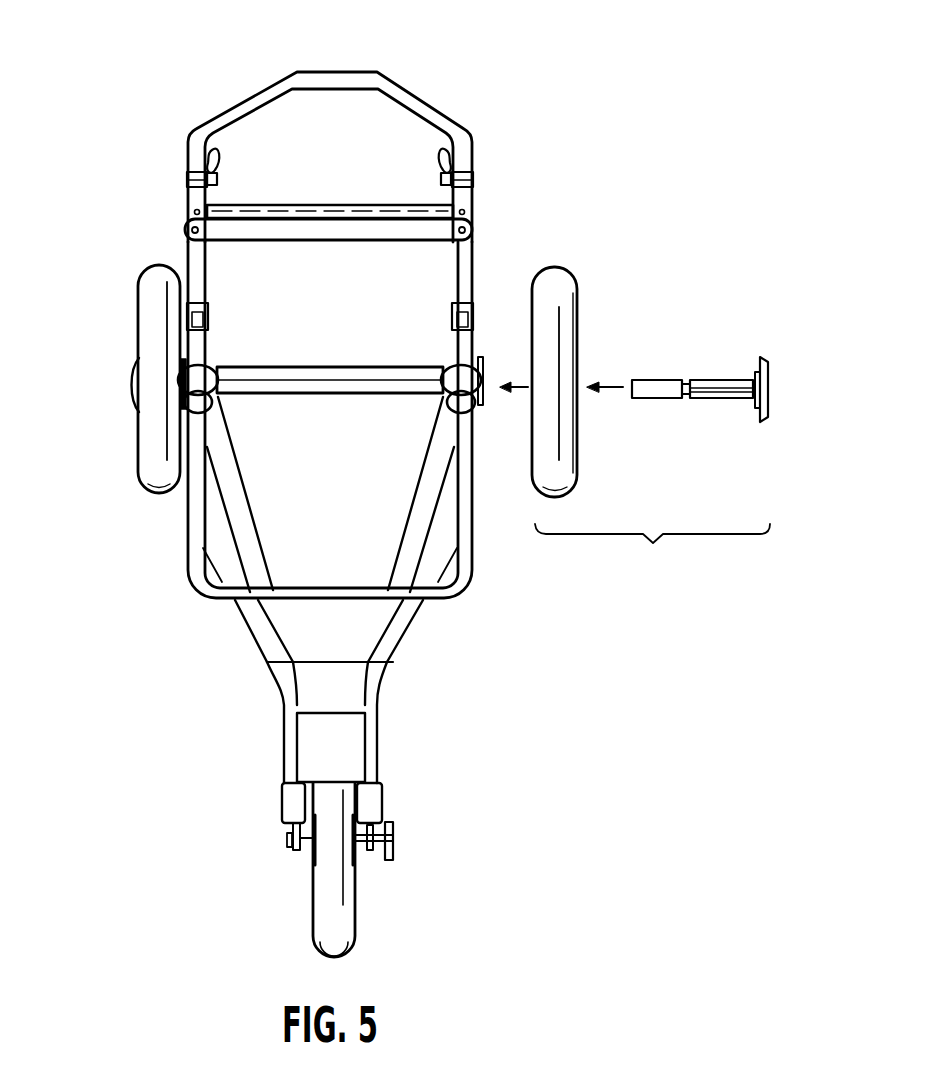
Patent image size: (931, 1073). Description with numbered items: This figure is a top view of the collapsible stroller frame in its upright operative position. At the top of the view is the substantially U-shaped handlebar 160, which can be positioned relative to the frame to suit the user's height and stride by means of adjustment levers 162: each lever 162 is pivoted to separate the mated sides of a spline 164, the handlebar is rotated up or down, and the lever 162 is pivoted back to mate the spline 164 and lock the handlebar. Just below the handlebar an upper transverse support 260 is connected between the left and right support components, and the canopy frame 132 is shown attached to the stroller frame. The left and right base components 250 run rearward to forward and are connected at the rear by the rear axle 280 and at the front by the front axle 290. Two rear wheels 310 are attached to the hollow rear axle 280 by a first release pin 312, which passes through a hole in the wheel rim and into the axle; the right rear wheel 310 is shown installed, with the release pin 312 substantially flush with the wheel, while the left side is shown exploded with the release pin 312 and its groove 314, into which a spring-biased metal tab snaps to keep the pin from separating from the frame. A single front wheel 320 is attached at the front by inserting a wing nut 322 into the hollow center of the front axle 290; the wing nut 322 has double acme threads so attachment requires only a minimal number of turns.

The canopy frame 132 is at (458, 580).
The handlebar 160 is at (352, 82).
The adjustment lever 162 is at (450, 171).
The spline 164 is at (473, 186).
The base 250 is at (242, 523).
The upper transverse support 260 is at (473, 229).
The rear axle 280 is at (330, 370).
The front axle 290 is at (303, 848).
The rear wheel 310 is at (148, 462).
The release pin 312 is at (135, 377).
The groove 314 is at (687, 380).
The front wheel 320 is at (333, 913).
The wing nut 322 is at (393, 838).